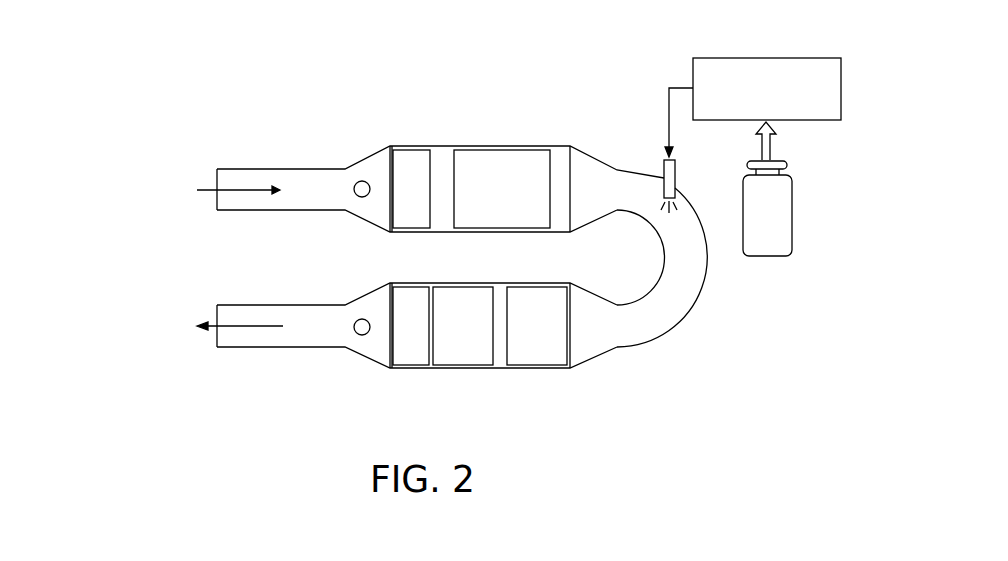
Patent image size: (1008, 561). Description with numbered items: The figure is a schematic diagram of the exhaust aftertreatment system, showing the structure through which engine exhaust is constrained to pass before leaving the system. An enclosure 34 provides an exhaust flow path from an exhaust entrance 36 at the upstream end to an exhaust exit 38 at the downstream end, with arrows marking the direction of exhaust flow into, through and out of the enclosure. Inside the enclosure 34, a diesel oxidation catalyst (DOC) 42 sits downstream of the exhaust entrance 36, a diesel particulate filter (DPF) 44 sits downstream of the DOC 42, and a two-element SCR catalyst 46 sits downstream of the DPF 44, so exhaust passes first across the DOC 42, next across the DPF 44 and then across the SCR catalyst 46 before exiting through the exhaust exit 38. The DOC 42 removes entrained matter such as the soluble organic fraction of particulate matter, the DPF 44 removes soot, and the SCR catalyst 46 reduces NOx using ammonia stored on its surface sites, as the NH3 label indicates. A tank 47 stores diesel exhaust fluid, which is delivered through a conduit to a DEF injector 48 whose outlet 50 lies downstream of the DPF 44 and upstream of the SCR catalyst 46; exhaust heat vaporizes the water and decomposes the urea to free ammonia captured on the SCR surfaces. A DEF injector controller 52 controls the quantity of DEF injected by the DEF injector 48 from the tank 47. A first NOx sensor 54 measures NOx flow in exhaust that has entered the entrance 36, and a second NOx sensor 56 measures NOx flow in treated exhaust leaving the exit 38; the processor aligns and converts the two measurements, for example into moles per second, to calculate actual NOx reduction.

The enclosure 34 is at (450, 146).
The exhaust entrance 36 is at (217, 205).
The exhaust exit 38 is at (217, 342).
The diesel oxidation catalyst (DOC) 42 is at (410, 158).
The diesel particulate filter (DPF) 44 is at (500, 160).
The two-element SCR catalyst 46 is at (473, 366).
The tank 47 is at (782, 218).
The DEF injector 48 is at (664, 166).
The outlet 50 is at (655, 212).
The DEF injector controller 52 is at (770, 58).
The first NOx sensor 54 is at (362, 181).
The second NOx sensor 56 is at (362, 336).